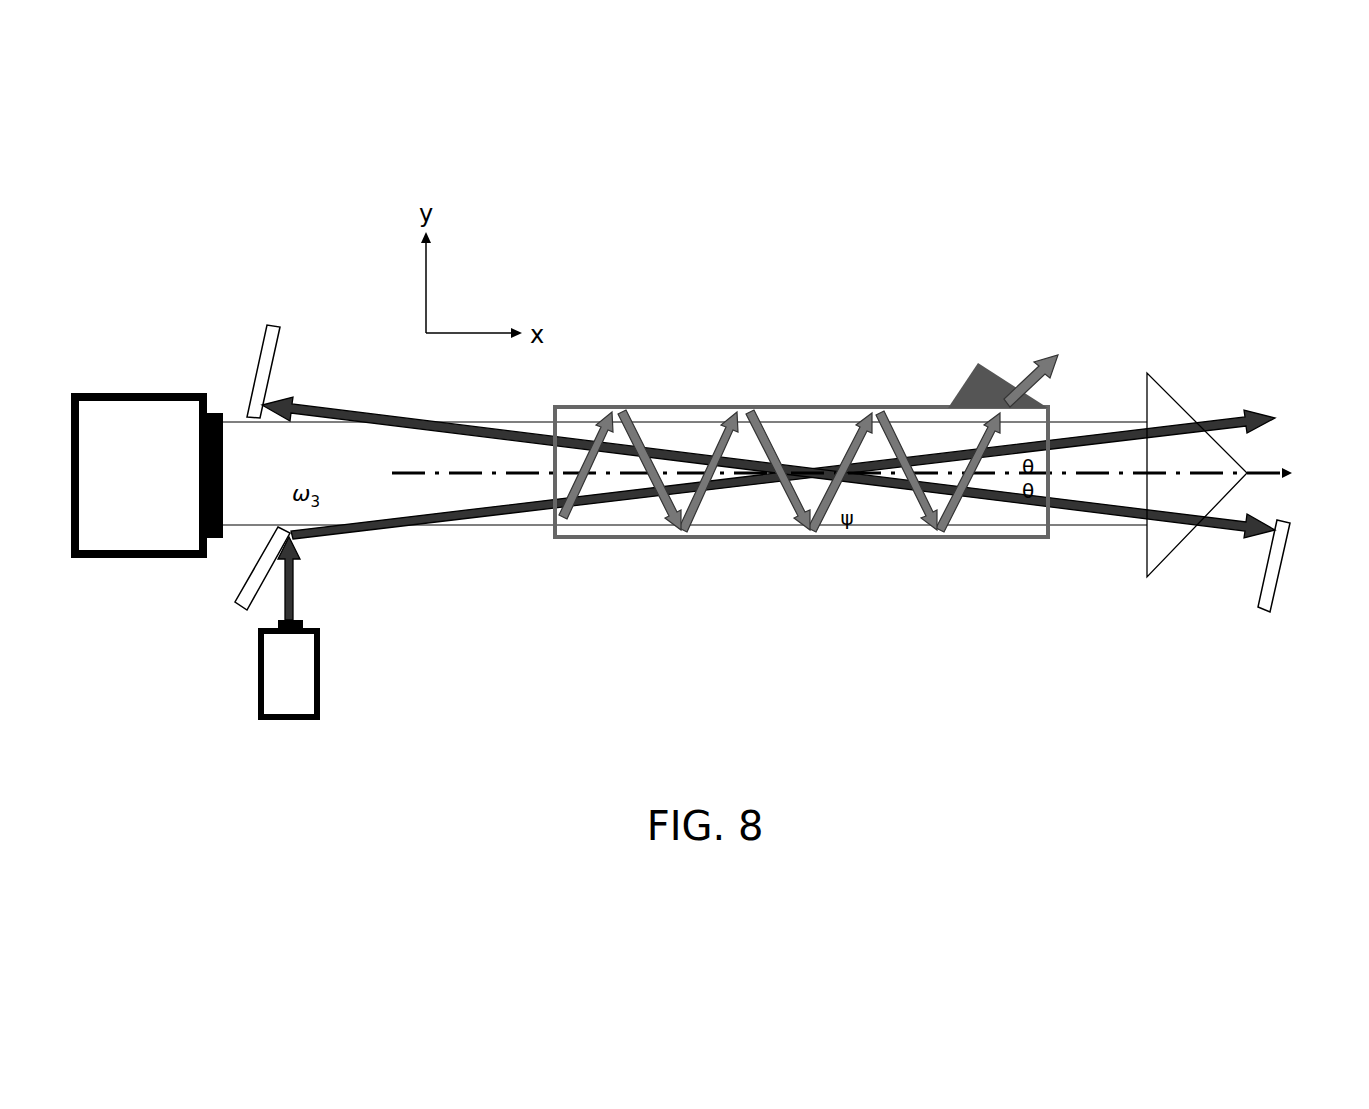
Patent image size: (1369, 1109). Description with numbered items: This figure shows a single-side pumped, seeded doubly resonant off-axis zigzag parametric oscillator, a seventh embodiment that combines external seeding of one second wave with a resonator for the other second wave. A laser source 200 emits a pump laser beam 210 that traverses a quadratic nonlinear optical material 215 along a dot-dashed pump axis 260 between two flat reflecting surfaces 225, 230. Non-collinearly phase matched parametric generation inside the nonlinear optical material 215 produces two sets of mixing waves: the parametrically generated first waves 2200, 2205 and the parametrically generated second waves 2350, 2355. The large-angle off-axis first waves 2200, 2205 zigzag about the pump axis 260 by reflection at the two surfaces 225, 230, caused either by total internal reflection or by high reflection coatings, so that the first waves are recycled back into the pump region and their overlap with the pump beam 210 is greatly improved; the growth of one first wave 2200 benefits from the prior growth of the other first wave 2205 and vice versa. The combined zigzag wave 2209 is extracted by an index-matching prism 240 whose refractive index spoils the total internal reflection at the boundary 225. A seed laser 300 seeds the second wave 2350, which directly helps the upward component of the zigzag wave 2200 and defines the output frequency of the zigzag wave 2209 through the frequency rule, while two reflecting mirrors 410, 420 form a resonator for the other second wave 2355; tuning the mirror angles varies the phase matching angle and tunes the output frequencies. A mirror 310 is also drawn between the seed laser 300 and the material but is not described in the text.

The laser source 200 is at (149, 475).
The pump laser beam 210 is at (264, 505).
The quadratic nonlinear optical material 215 is at (632, 507).
The flat reflecting surface 225 is at (797, 398).
The flat reflecting surface 230 is at (868, 543).
The index-matching prism 240 is at (953, 377).
The pump axis 260 is at (871, 474).
The seed laser 300 is at (289, 627).
The pump coupling mirror 310 is at (249, 583).
The reflecting mirror 410 is at (241, 371).
The reflecting mirror 420 is at (1294, 566).
The parametrically generated first wave 2200 is at (723, 440).
The parametrically generated first wave 2205 is at (783, 503).
The zigzag wave 2209 is at (1063, 377).
The parametrically generated second wave 2350 is at (1227, 538).
The parametrically generated second wave 2355 is at (1228, 410).